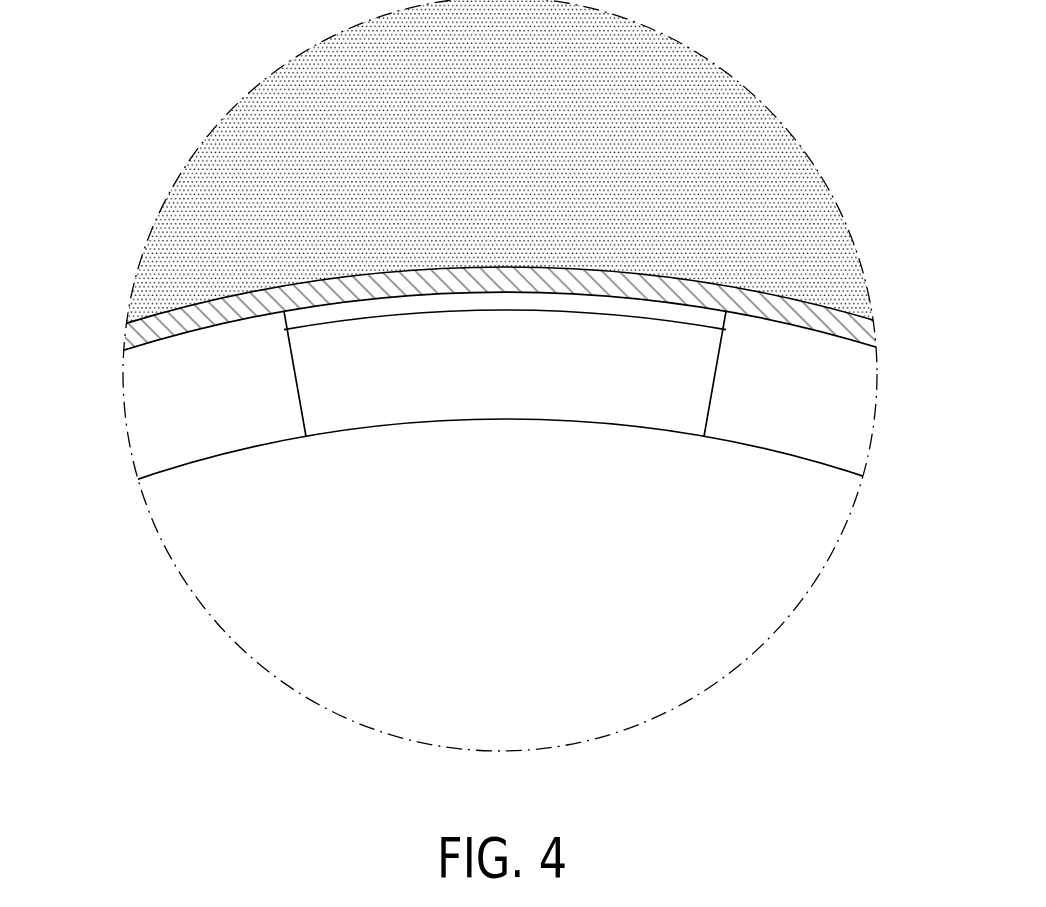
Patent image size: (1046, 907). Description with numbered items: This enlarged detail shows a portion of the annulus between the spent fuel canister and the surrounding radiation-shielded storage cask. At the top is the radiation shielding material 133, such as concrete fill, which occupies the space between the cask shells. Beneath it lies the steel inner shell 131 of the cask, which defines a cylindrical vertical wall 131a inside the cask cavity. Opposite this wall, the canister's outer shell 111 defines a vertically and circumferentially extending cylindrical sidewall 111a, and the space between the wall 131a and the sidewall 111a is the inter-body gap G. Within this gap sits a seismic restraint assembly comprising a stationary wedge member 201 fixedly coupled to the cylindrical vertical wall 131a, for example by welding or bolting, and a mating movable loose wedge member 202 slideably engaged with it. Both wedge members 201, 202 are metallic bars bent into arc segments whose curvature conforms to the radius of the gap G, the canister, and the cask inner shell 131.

The radiation shielding material 133 is at (777, 162).
The inner shell 131 is at (531, 373).
The cylindrical vertical wall 131a is at (228, 330).
The outer shell 111 is at (535, 425).
The cylindrical sidewall 111a is at (840, 456).
The stationary wedge member 201 is at (363, 305).
The movable loose wedge member 202 is at (505, 404).
The inter-body gap G is at (167, 407).